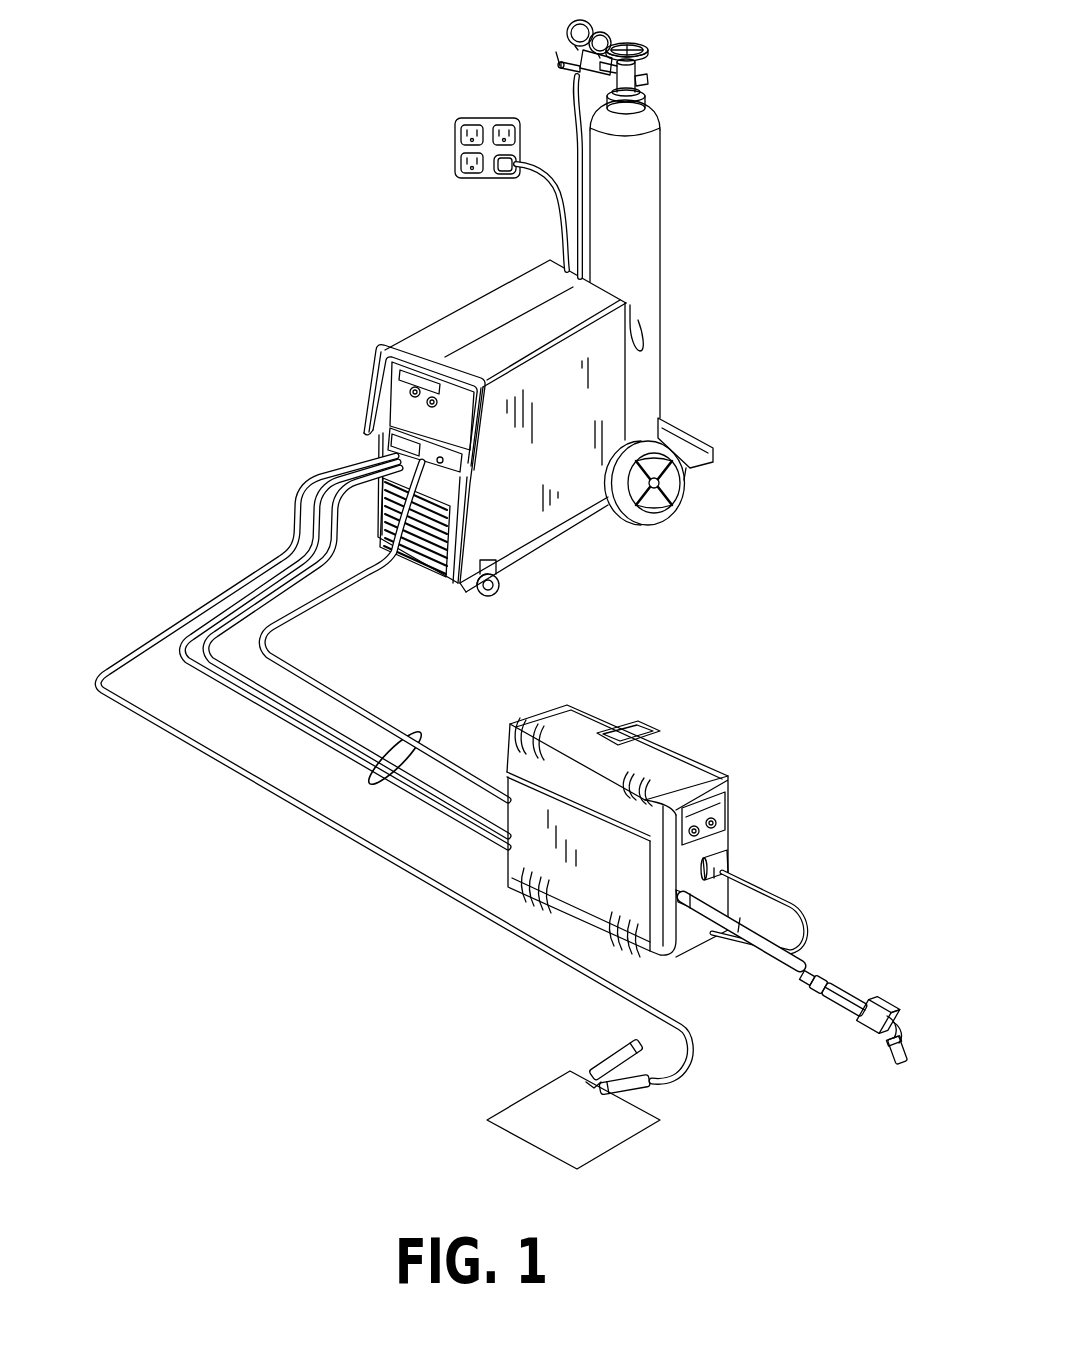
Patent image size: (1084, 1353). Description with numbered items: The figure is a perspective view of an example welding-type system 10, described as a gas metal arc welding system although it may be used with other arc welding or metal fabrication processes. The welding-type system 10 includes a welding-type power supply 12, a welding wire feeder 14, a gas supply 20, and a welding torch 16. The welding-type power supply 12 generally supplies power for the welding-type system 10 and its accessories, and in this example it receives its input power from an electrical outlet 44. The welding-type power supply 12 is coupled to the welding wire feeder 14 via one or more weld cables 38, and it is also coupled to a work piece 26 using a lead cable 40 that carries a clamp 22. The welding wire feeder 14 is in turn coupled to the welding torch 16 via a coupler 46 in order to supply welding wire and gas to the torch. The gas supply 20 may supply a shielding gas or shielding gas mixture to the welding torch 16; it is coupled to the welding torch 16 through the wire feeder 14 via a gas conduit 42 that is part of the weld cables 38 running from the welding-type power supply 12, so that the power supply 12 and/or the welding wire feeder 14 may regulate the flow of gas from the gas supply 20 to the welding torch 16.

The welding-type system 10 is at (324, 255).
The welding-type power supply 12 is at (520, 286).
The welding wire feeder 14 is at (689, 702).
The welding torch 16 is at (838, 992).
The gas supply 20 is at (652, 188).
The clamp 22 is at (617, 1046).
The work piece 26 is at (593, 1128).
The weld cables 38 is at (420, 733).
The lead cable 40 is at (126, 650).
The gas conduit 42 is at (304, 677).
The electrical outlet 44 is at (456, 147).
The coupler 46 is at (746, 940).